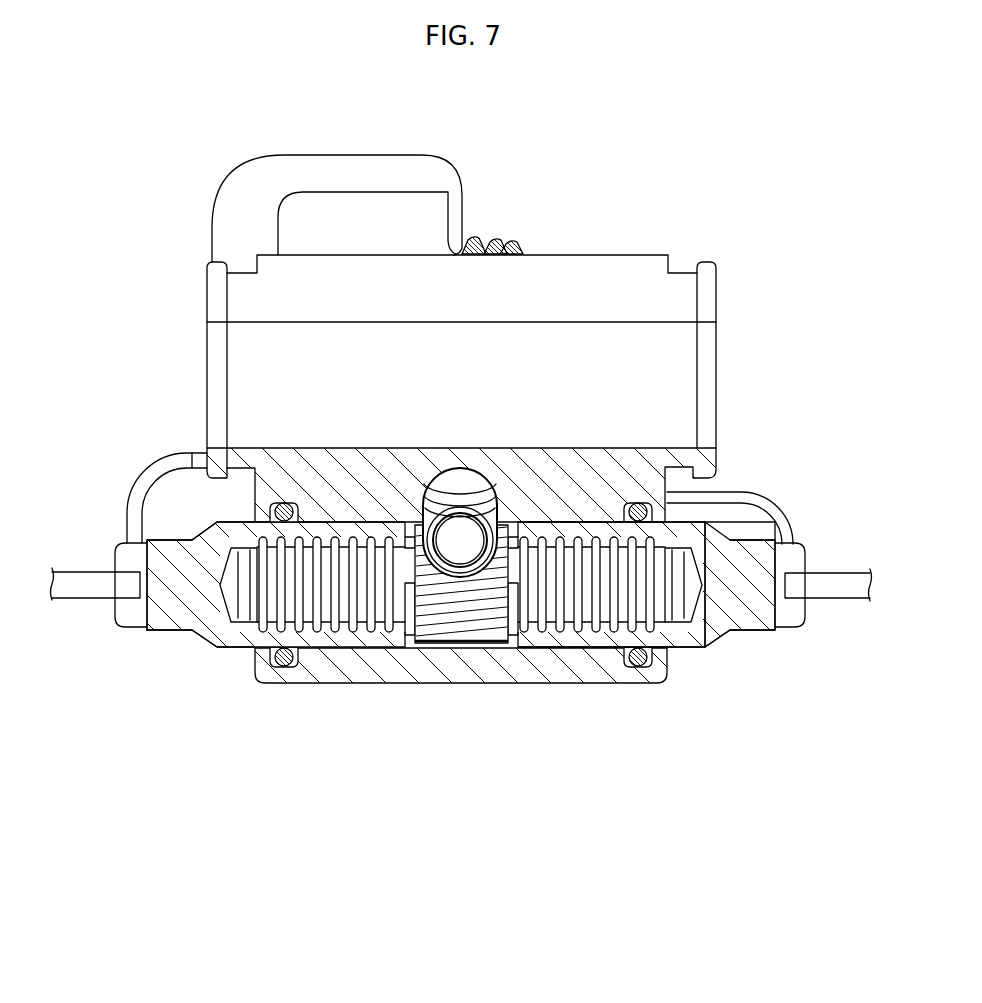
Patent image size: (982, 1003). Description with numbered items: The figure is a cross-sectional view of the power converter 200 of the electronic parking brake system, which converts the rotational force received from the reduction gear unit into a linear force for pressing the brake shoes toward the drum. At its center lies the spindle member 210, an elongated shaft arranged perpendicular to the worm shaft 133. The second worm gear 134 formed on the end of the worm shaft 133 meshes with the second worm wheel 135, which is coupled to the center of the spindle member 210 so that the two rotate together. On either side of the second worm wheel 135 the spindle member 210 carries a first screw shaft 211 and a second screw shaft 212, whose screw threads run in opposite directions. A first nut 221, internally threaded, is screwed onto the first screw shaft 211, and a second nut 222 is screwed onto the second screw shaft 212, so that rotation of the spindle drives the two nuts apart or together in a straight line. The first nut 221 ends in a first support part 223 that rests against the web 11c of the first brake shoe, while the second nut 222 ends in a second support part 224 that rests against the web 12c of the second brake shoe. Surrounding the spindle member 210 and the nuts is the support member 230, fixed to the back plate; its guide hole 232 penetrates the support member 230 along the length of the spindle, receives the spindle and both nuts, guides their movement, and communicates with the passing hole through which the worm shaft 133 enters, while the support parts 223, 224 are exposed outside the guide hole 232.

The web 11c is at (80, 578).
The web 12c is at (843, 580).
The worm shaft 133 is at (450, 533).
The second worm gear 134 is at (470, 478).
The second worm wheel 135 is at (458, 621).
The power converter 200 is at (615, 751).
The spindle member 210 is at (499, 645).
The first screw shaft 211 is at (321, 540).
The second screw shaft 212 is at (599, 540).
The first nut 221 is at (226, 641).
The second nut 222 is at (695, 643).
The first support part 223 is at (133, 621).
The second support part 224 is at (790, 620).
The support member 230 is at (313, 674).
The guide hole 232 is at (580, 641).